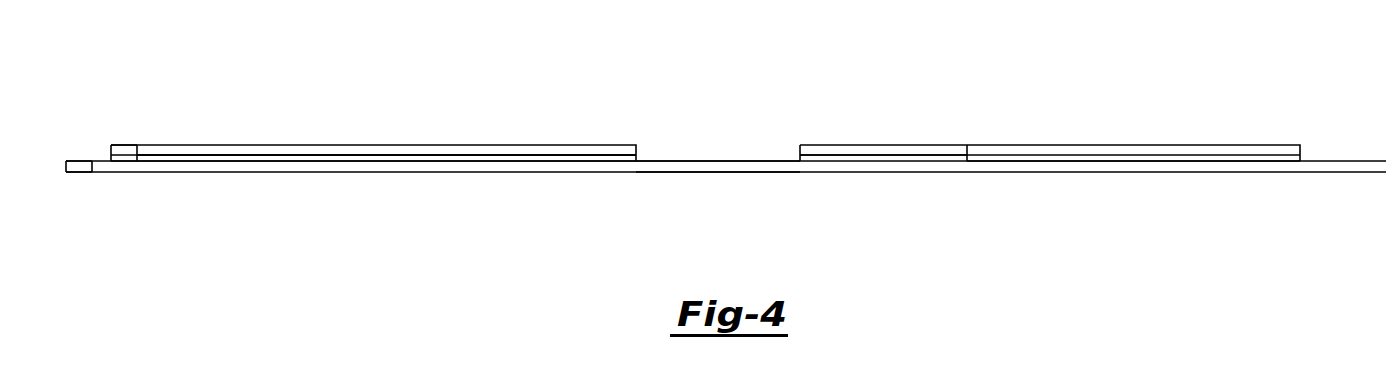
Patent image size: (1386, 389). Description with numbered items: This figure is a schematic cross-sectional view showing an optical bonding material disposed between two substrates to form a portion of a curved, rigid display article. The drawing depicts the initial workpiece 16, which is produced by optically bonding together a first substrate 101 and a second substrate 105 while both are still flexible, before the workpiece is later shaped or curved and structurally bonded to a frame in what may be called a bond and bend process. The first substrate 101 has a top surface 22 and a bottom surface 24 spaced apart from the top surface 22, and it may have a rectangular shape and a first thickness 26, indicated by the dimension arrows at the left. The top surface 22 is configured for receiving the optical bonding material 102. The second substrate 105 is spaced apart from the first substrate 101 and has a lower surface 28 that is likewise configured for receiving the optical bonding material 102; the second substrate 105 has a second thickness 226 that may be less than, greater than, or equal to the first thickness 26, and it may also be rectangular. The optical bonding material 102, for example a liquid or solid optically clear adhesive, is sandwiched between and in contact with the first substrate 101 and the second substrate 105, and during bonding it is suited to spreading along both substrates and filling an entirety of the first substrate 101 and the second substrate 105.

The initial workpiece 16 is at (184, 119).
The second thickness 226 is at (124, 192).
The first thickness 26 is at (79, 125).
The lower surface 28 is at (500, 155).
The optical bonding material 102 is at (242, 156).
The second substrate 105 is at (323, 160).
The top surface 22 is at (663, 160).
The bottom surface 24 is at (768, 170).
The first substrate 101 is at (715, 174).